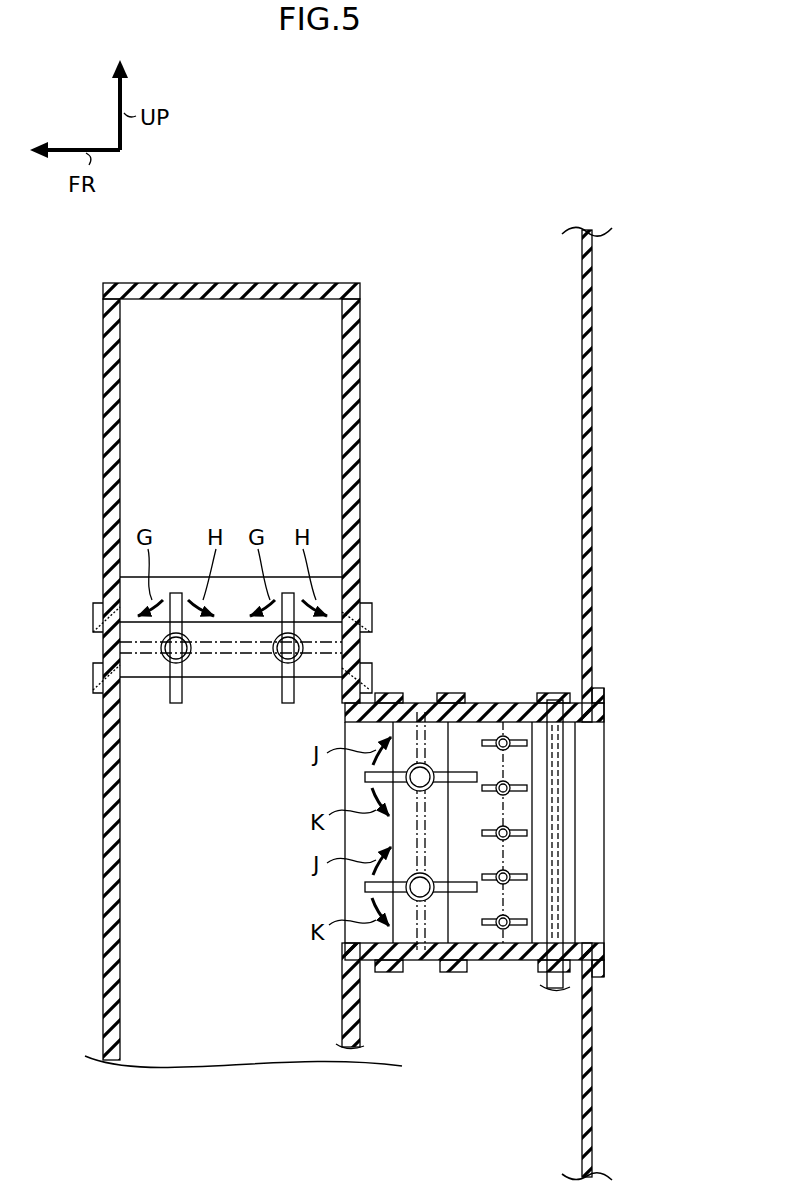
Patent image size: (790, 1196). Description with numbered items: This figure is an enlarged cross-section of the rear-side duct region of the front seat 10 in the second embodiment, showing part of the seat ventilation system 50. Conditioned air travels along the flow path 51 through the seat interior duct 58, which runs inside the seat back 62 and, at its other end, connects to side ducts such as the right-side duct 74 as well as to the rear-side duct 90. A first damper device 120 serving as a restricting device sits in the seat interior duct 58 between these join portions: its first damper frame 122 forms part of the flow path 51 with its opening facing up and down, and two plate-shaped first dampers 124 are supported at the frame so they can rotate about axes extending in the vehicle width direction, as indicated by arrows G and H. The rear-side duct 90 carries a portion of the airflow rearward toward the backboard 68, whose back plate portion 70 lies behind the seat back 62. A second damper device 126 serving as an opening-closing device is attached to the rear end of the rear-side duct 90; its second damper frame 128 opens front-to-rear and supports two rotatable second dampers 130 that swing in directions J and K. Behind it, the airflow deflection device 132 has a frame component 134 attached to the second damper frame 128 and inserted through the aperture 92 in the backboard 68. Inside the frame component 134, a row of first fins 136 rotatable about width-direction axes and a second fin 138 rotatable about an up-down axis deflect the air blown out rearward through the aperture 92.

The front seat 10 is at (631, 703).
The seat ventilation system 50 is at (268, 675).
The flow path 51 is at (268, 675).
The seat interior duct 58 is at (103, 1023).
The seat back 62 is at (631, 703).
The backboard 68 is at (598, 432).
The back plate portion 70 is at (596, 481).
The right-side duct 74 is at (320, 577).
The rear-side duct 90 is at (494, 963).
The aperture 92 is at (588, 943).
The first damper device 120 is at (213, 728).
The first damper frame 122 is at (93, 642).
The first damper 124 is at (152, 660).
The second damper device 126 is at (422, 676).
The second damper frame 128 is at (423, 961).
The second damper 130 is at (365, 777).
The airflow deflection device 132 is at (494, 814).
The frame component 134 is at (478, 962).
The first fin 136 is at (502, 736).
The second fin 138 is at (570, 778).